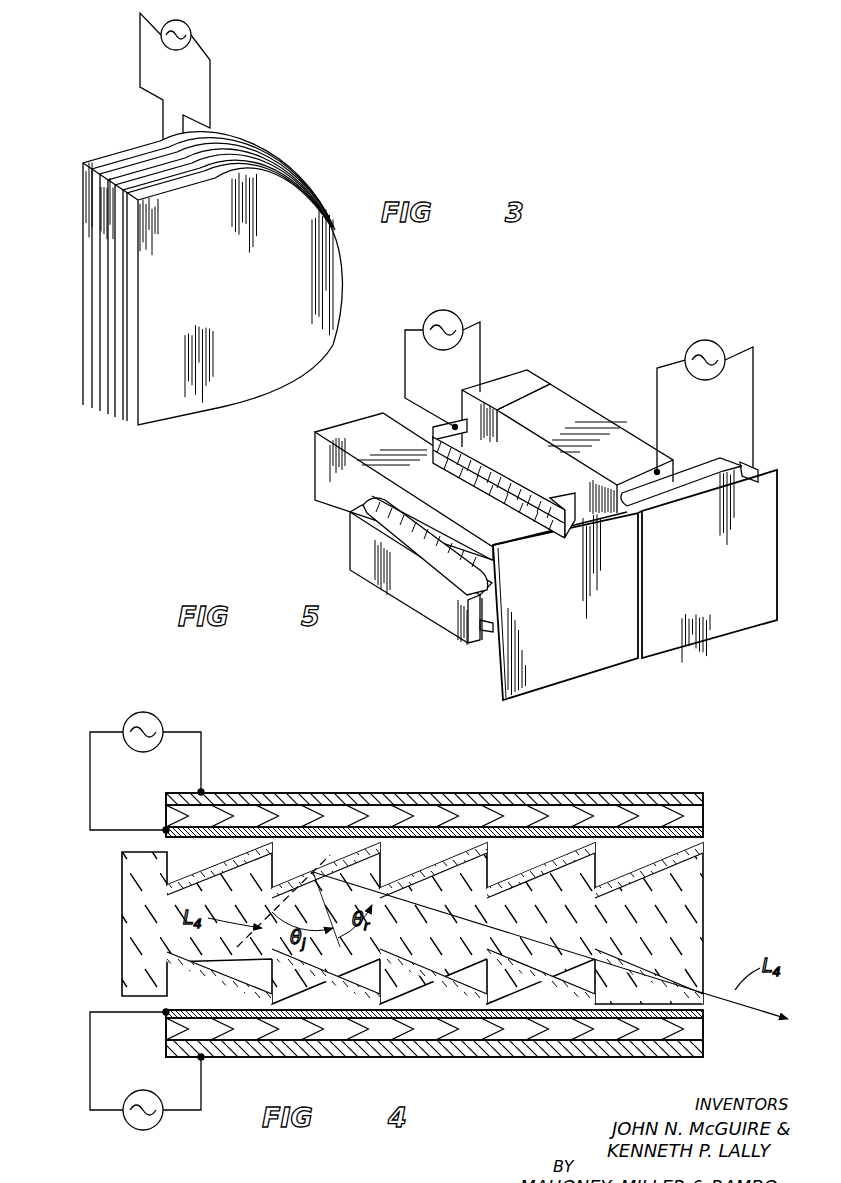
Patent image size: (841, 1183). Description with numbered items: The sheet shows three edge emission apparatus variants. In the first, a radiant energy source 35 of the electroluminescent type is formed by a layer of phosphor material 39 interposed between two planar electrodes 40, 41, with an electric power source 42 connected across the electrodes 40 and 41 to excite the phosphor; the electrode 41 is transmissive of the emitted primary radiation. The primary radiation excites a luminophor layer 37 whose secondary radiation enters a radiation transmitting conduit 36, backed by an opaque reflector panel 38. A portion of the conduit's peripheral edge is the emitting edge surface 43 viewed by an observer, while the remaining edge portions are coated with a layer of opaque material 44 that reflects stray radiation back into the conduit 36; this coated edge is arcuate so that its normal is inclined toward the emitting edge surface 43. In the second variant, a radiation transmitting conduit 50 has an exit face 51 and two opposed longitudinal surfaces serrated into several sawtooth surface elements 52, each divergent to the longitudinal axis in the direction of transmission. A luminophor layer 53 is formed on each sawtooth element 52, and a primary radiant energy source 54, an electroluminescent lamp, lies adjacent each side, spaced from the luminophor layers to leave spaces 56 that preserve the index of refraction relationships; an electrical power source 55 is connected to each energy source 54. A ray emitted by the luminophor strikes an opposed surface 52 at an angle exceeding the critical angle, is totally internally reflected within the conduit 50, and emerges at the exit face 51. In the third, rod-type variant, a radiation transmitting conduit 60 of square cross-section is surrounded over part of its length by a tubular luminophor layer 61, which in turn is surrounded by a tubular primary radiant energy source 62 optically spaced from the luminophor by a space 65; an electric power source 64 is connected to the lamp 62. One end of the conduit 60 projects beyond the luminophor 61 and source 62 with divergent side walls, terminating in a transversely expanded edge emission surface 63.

In FIG. 3, the radiant energy source 35 is at (218, 406).
In FIG. 3, the radiation transmitting conduit 36 is at (98, 232).
In FIG. 3, the luminophor layer 37 is at (90, 335).
In FIG. 3, the opaque reflector panel 38 is at (82, 292).
In FIG. 3, the phosphor material 39 is at (128, 345).
In FIG. 3, the planar electrode 40 is at (133, 310).
In FIG. 3, the planar electrode 41 is at (108, 286).
In FIG. 3, the electric power source 42 is at (192, 30).
In FIG. 3, the emitting edge surface 43 is at (98, 381).
In FIG. 3, the layer of opaque material 44 is at (130, 165).
In FIG. 4, the radiation transmitting conduit 50 is at (411, 947).
In FIG. 4, the exit face 51 is at (705, 900).
In FIG. 4, the sawtooth surface element 52 is at (705, 865).
In FIG. 4, the luminophor layer 53 is at (215, 866).
In FIG. 4, the primary radiant energy source 54 is at (466, 922).
In FIG. 4, the electrical power source 55 is at (157, 720).
In FIG. 4, the space 56 is at (714, 837).
In FIG. 5, the radiation transmitting conduit 60 is at (515, 385).
In FIG. 5, the luminophor layer 61 is at (725, 462).
In FIG. 5, the primary radiant energy source 62 is at (587, 395).
In FIG. 5, the edge emission surface 63 is at (635, 585).
In FIG. 5, the electric power source 64 is at (449, 318).
In FIG. 5, the space 65 is at (688, 475).